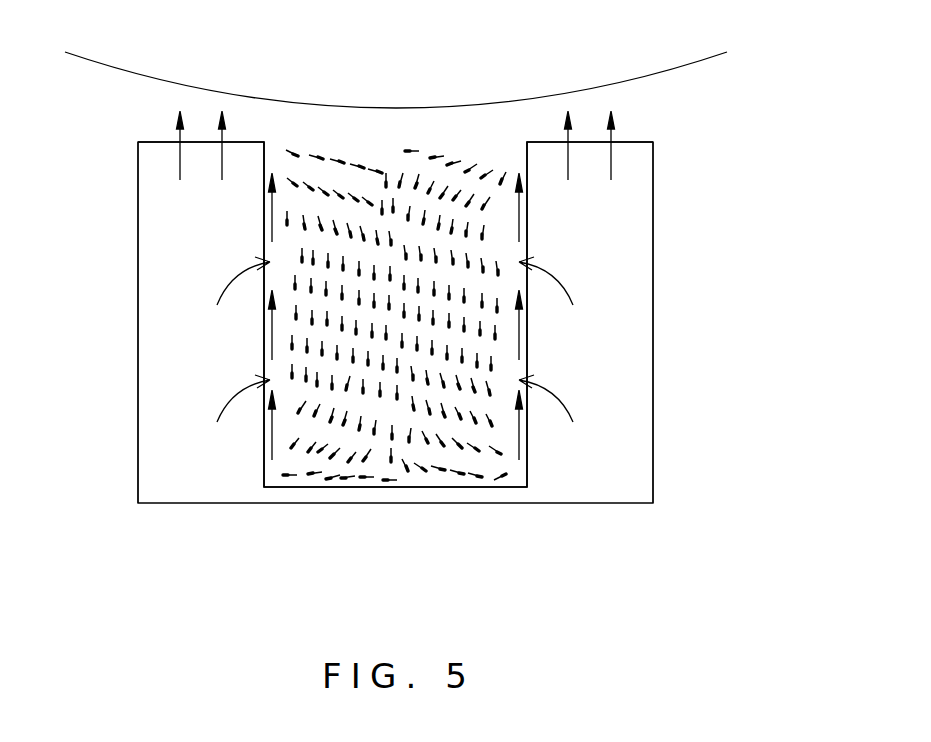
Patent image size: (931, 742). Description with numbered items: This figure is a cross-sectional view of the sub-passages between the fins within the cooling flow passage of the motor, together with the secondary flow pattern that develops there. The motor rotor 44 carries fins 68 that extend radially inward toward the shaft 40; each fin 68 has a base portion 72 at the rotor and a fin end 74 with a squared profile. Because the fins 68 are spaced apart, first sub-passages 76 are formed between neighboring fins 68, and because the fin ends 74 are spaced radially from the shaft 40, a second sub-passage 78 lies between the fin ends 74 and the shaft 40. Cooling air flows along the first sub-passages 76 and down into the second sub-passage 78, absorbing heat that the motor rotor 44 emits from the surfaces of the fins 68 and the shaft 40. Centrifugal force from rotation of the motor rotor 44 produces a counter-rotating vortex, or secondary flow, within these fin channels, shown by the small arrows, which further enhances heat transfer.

The shaft 40 is at (677, 72).
The motor rotor 44 is at (193, 497).
The fins 68 is at (138, 357).
The base portion 72 is at (617, 422).
The fin end 74 is at (632, 142).
The first sub-passages 76 is at (138, 208).
The second sub-passage 78 is at (386, 487).